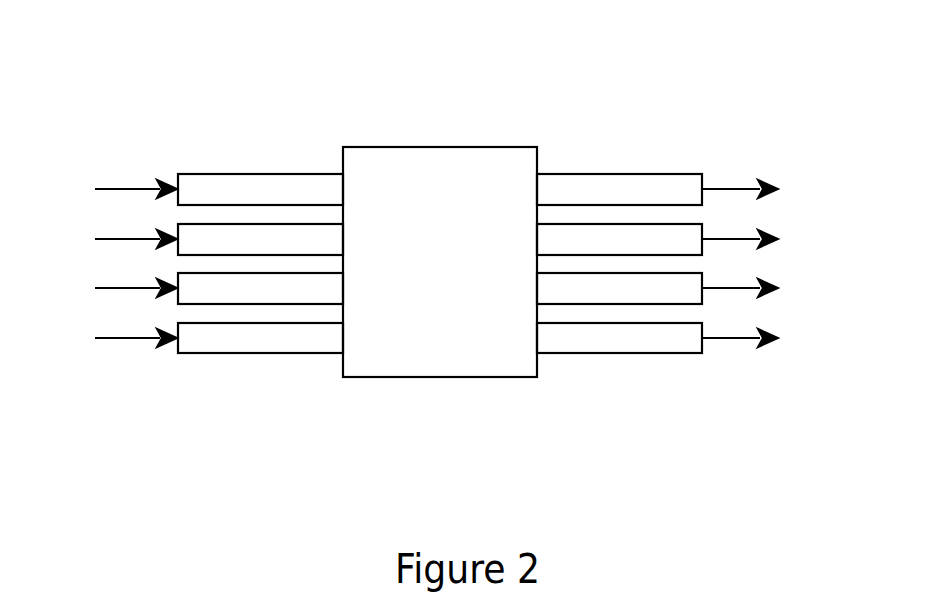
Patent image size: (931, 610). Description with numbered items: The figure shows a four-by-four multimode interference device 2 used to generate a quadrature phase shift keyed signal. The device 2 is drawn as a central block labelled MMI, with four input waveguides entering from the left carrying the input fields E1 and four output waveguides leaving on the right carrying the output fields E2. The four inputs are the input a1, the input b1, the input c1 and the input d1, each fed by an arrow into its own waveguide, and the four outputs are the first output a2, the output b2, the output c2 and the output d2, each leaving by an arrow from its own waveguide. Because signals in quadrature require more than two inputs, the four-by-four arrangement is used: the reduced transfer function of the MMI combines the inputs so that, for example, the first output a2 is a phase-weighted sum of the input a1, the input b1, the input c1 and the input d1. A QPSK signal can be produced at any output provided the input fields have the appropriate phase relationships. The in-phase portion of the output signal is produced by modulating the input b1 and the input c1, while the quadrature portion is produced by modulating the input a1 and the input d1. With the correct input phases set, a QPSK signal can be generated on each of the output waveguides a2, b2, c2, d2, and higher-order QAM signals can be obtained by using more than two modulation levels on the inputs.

The 4×4 Multimode Interference (MMI) device 2 is at (435, 147).
The input field E1 is at (260, 231).
The output field E2 is at (619, 231).
The input a1 is at (117, 185).
The input b1 is at (117, 235).
The input c1 is at (117, 284).
The input d1 is at (116, 334).
The first output a2 is at (761, 185).
The output b2 is at (762, 235).
The output c2 is at (761, 284).
The output d2 is at (761, 334).